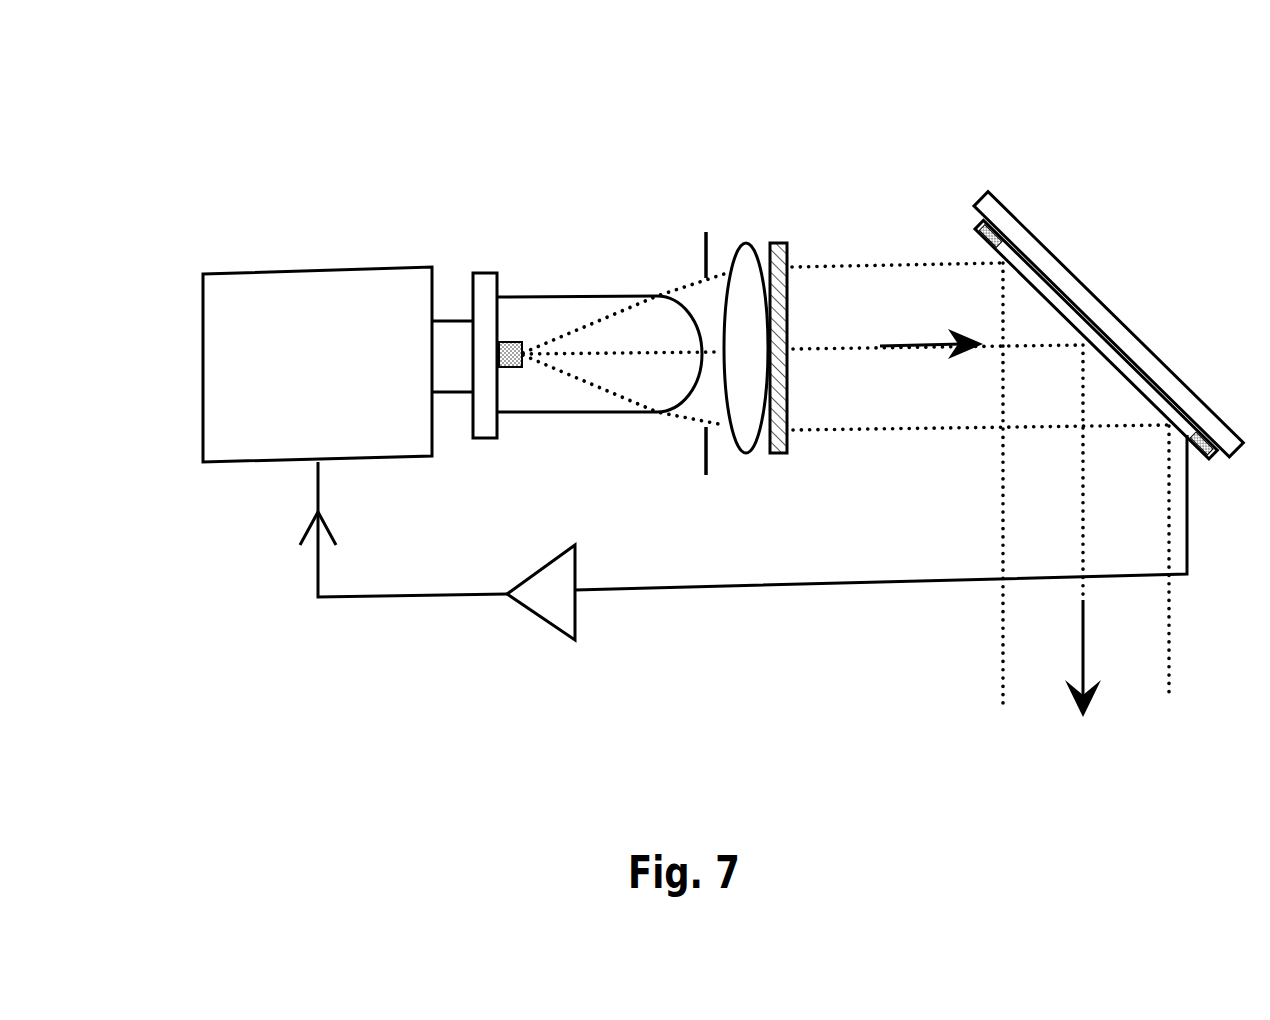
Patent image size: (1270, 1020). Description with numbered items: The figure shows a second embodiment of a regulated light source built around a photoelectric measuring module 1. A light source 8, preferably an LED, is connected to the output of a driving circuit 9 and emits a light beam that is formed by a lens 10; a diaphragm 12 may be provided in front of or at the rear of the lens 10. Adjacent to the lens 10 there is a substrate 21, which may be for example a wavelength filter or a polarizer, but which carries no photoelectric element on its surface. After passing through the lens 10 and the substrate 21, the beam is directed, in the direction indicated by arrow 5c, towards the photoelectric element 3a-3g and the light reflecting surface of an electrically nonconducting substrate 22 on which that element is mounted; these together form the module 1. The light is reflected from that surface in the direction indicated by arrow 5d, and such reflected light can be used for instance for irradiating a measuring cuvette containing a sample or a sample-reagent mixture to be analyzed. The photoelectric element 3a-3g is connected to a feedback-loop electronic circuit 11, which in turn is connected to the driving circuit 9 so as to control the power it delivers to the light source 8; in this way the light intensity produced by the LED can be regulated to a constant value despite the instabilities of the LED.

The photoelectric measuring module 1 is at (1217, 470).
The photoelectric element 3a-3g is at (998, 230).
The arrow indicating direction of light beam 5c is at (902, 348).
The arrow indicating direction of reflected light 5d is at (1077, 657).
The light source 8 is at (531, 317).
The driving circuit 9 is at (287, 307).
The lens 10 is at (753, 427).
The electronic circuit 11 is at (553, 588).
The diaphragm 12 is at (697, 217).
The substrate 21 is at (798, 222).
The substrate 22 is at (1022, 248).